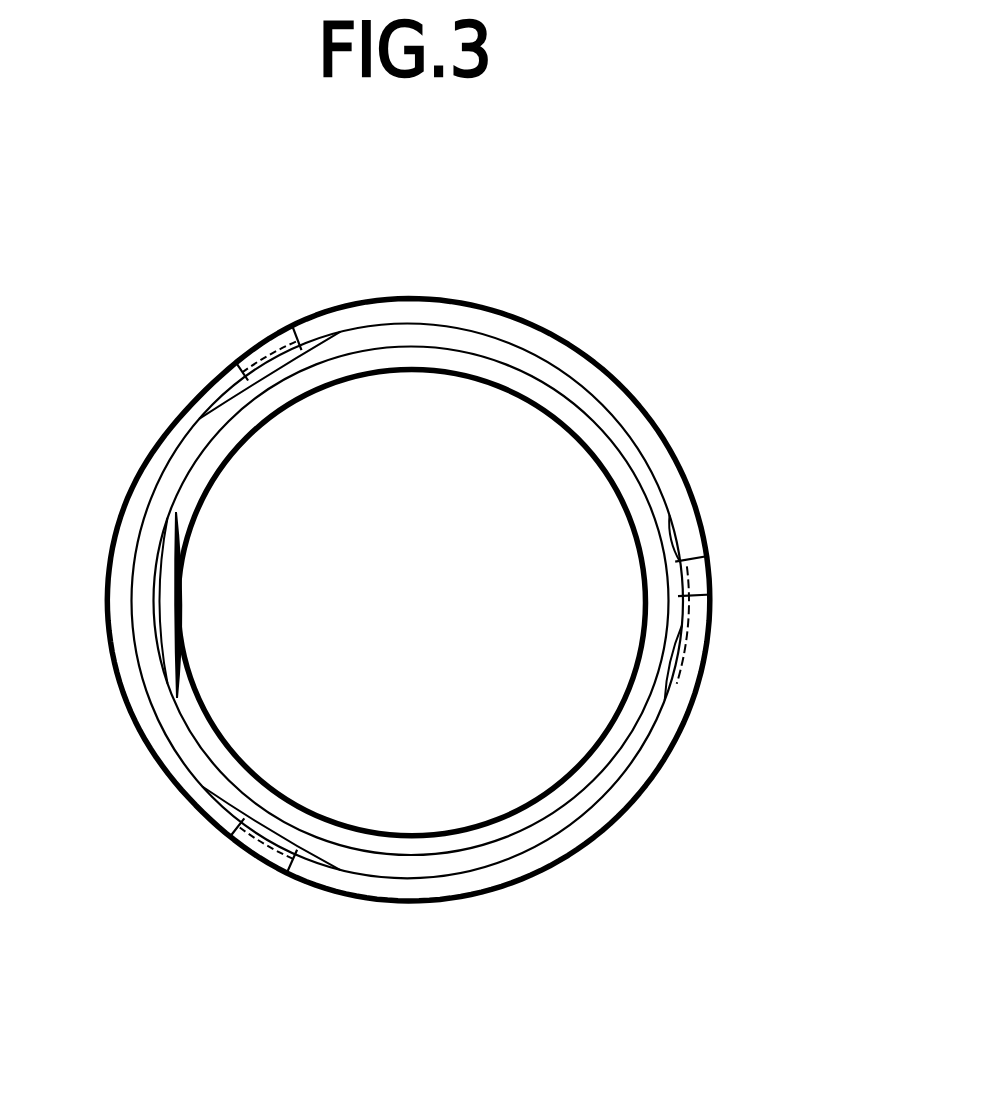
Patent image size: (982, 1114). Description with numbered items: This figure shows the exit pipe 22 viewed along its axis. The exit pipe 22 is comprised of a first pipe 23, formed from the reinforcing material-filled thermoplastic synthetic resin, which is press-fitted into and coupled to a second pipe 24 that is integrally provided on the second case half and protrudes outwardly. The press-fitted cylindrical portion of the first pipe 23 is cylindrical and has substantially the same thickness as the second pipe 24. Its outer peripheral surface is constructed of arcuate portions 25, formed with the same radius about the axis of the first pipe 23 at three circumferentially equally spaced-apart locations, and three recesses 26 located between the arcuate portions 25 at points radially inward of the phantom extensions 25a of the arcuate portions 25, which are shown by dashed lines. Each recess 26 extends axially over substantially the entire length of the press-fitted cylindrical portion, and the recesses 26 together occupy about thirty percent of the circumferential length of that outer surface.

The exit pipe 22 is at (650, 275).
The first pipe 23 is at (617, 427).
The second pipe 24 is at (608, 383).
The arcuate portions 25 is at (155, 482).
The phantom extensions 25a is at (297, 340).
The recesses 26 is at (246, 376).